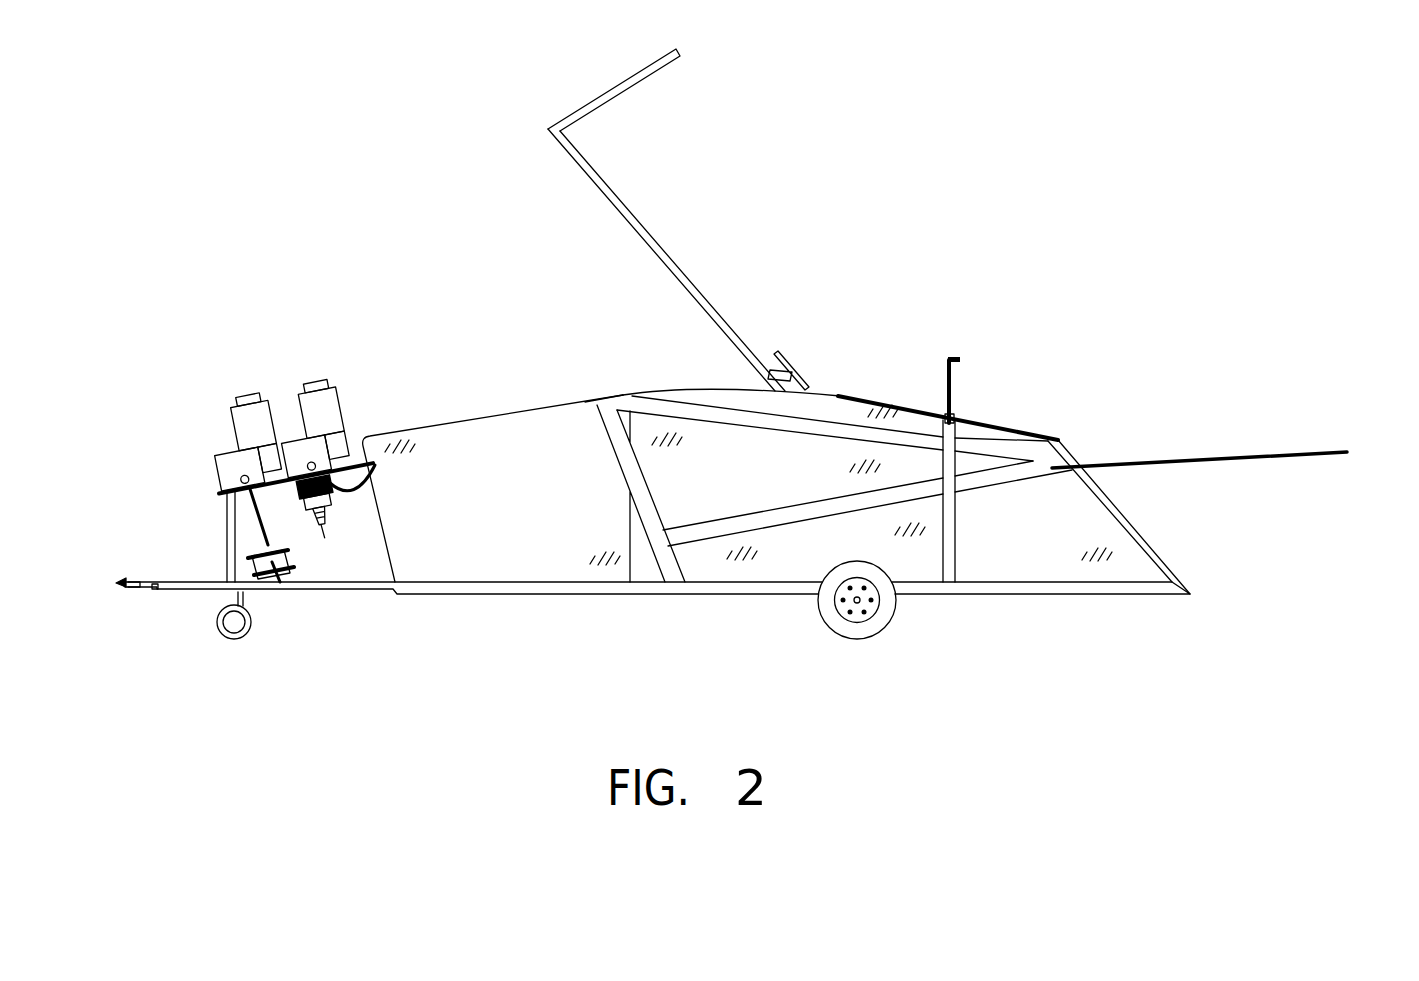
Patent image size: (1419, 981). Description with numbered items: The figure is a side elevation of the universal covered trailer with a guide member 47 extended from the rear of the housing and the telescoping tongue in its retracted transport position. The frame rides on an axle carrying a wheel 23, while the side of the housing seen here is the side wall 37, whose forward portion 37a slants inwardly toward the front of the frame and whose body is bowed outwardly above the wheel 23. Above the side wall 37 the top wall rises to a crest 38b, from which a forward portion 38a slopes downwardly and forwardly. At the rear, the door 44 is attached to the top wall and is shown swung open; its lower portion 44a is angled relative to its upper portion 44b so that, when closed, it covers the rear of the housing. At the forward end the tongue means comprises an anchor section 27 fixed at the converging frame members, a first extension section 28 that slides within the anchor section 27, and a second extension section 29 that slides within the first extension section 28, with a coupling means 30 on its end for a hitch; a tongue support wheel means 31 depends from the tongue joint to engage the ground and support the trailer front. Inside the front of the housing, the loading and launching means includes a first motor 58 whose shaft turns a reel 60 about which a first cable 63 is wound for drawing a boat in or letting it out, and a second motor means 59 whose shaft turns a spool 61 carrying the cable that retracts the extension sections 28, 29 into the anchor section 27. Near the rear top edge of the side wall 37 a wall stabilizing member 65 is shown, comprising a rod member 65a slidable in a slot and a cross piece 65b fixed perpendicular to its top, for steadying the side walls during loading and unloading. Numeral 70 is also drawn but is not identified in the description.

The wheel 23 is at (856, 630).
The anchor section 27 is at (222, 583).
The first lockable extension section 28 is at (154, 590).
The second extension section 29 is at (133, 580).
The coupling means 30 is at (119, 580).
The tongue support wheel means 31 is at (238, 622).
The side wall 37 is at (747, 570).
The forward portion of side wall 37a is at (587, 547).
The forward portion of top wall 38a is at (432, 426).
The crest 38b is at (622, 394).
The door 44 is at (643, 220).
The lower portion of door 44a is at (600, 98).
The upper portion of door 44b is at (662, 264).
The guide member 47 is at (1322, 450).
The first motor 58 is at (318, 384).
The second motor means 59 is at (244, 403).
The reel 60 is at (332, 513).
The spool 61 is at (290, 557).
The first cable 63 is at (373, 481).
The wall stabilizing member 65 is at (952, 383).
The rod member 65a is at (955, 410).
The cross piece 65b is at (960, 360).
The support post 70 is at (228, 520).